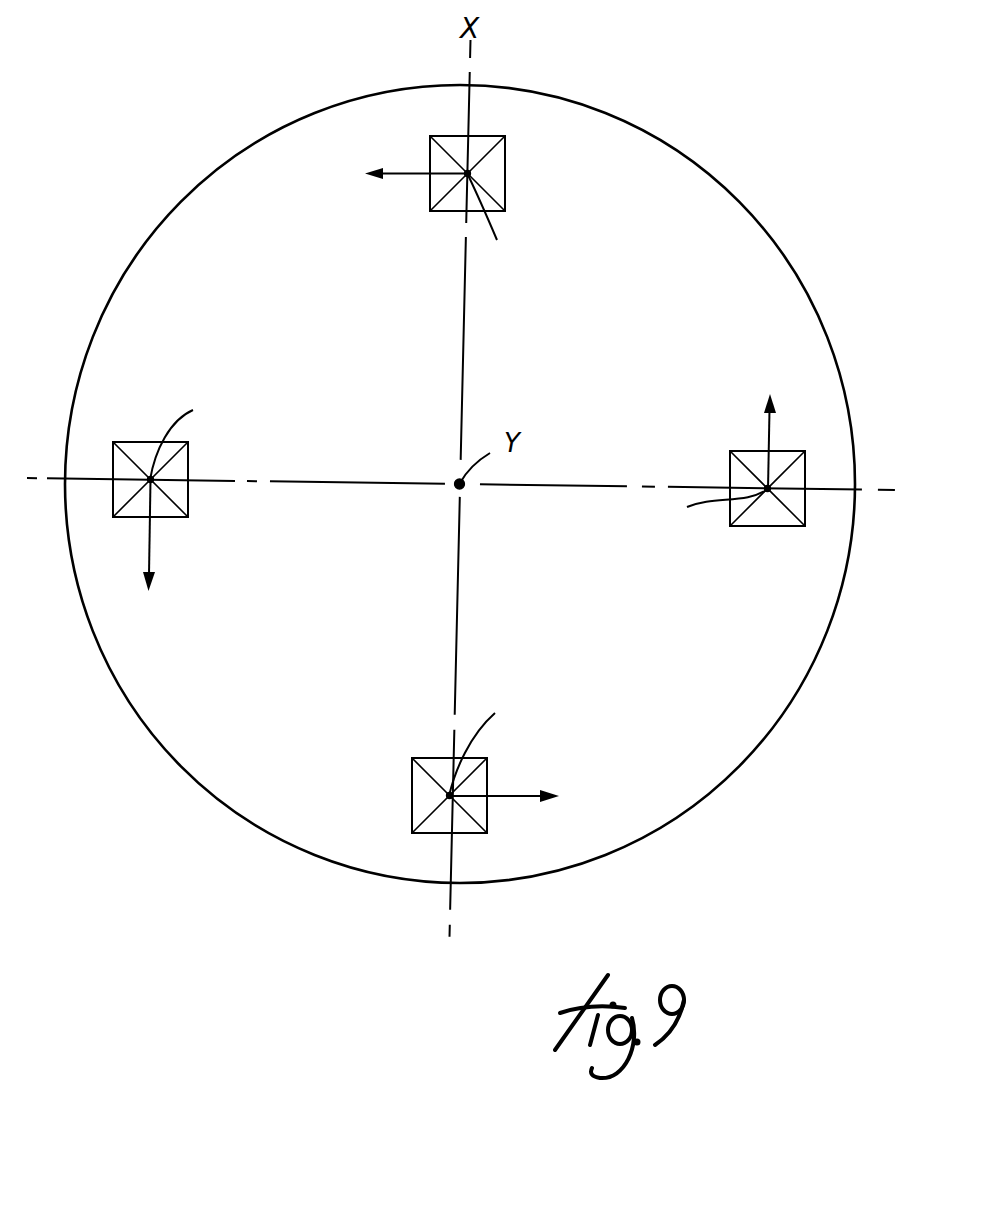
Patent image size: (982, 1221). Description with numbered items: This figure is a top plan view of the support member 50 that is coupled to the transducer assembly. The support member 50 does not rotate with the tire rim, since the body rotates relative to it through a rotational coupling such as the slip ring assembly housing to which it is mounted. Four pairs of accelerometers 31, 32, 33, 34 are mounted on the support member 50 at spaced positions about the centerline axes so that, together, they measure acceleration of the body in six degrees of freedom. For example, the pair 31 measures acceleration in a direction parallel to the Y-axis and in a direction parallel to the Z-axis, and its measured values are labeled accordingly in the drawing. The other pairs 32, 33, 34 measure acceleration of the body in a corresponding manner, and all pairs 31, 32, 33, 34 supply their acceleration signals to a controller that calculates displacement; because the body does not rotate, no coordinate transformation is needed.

The support member 50 is at (263, 91).
The pair of accelerometers 31 is at (505, 148).
The pair of accelerometers 32 is at (130, 442).
The pair of accelerometers 33 is at (412, 803).
The pair of accelerometers 34 is at (778, 526).